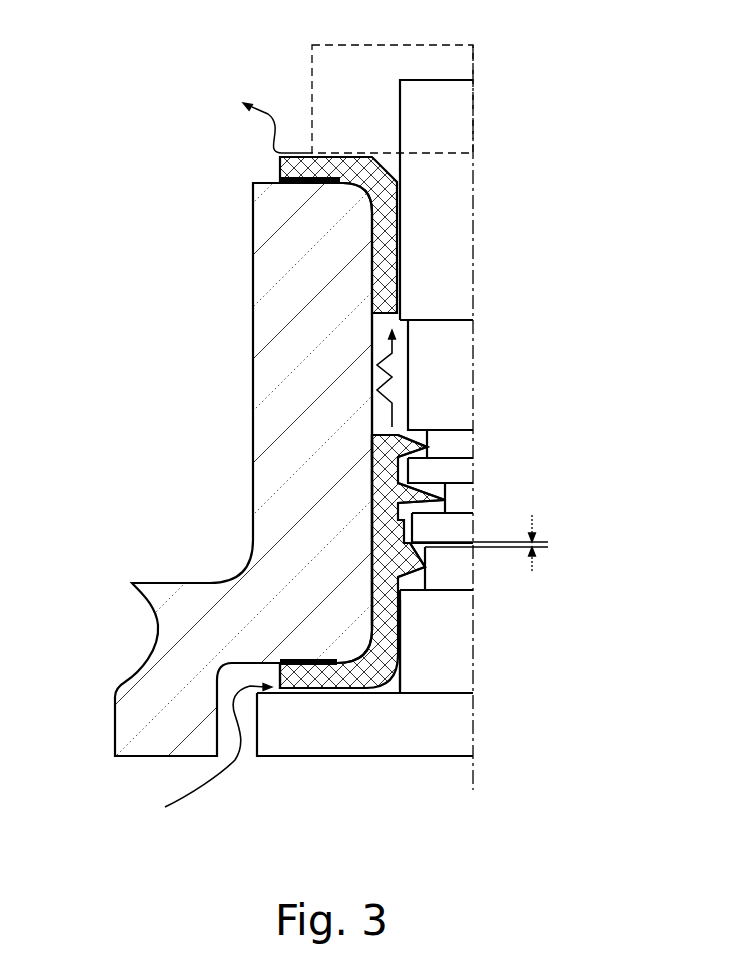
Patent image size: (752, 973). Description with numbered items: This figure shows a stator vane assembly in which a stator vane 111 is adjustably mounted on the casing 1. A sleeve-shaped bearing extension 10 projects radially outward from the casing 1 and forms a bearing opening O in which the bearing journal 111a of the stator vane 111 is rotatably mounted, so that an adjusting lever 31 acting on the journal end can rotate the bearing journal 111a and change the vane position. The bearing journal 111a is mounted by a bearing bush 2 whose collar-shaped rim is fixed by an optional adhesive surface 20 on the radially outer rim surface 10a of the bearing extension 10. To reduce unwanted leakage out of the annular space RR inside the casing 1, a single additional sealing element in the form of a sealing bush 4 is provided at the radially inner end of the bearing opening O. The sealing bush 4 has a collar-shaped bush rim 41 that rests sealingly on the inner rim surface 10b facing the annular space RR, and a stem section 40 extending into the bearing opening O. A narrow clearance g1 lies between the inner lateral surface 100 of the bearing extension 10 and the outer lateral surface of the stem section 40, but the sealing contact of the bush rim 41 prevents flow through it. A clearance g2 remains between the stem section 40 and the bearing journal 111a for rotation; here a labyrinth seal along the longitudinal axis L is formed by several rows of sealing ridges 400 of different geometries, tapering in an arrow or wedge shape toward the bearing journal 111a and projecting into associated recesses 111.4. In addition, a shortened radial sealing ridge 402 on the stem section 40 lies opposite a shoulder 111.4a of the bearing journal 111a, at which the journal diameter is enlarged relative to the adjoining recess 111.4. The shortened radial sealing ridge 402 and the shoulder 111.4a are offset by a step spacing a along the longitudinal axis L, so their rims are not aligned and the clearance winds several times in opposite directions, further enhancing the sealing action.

The casing 1 is at (127, 630).
The bearing extension 10 is at (281, 291).
The radially outer rim surface 10a is at (263, 182).
The inner rim surface 10b is at (278, 664).
The inner lateral surface 100 is at (385, 340).
The bearing bush 2 is at (404, 214).
The adhesive surface 20 is at (297, 184).
The adjusting lever 31 is at (407, 52).
The longitudinal axis L is at (474, 118).
The stator vane 111 is at (476, 772).
The bearing journal 111a is at (446, 268).
The recess 111.4 is at (462, 437).
The shoulder 111.4a is at (474, 523).
The sealing bush 4 is at (384, 627).
The stem section 40 is at (364, 567).
The sealing ridge 400 is at (439, 448).
The shortened radial sealing ridge 402 is at (370, 532).
The bush rim 41 is at (340, 682).
The clearance g1 is at (365, 458).
The clearance g2 is at (404, 637).
The step spacing a is at (484, 546).
The bearing opening O is at (408, 371).
The annular space RR is at (243, 775).